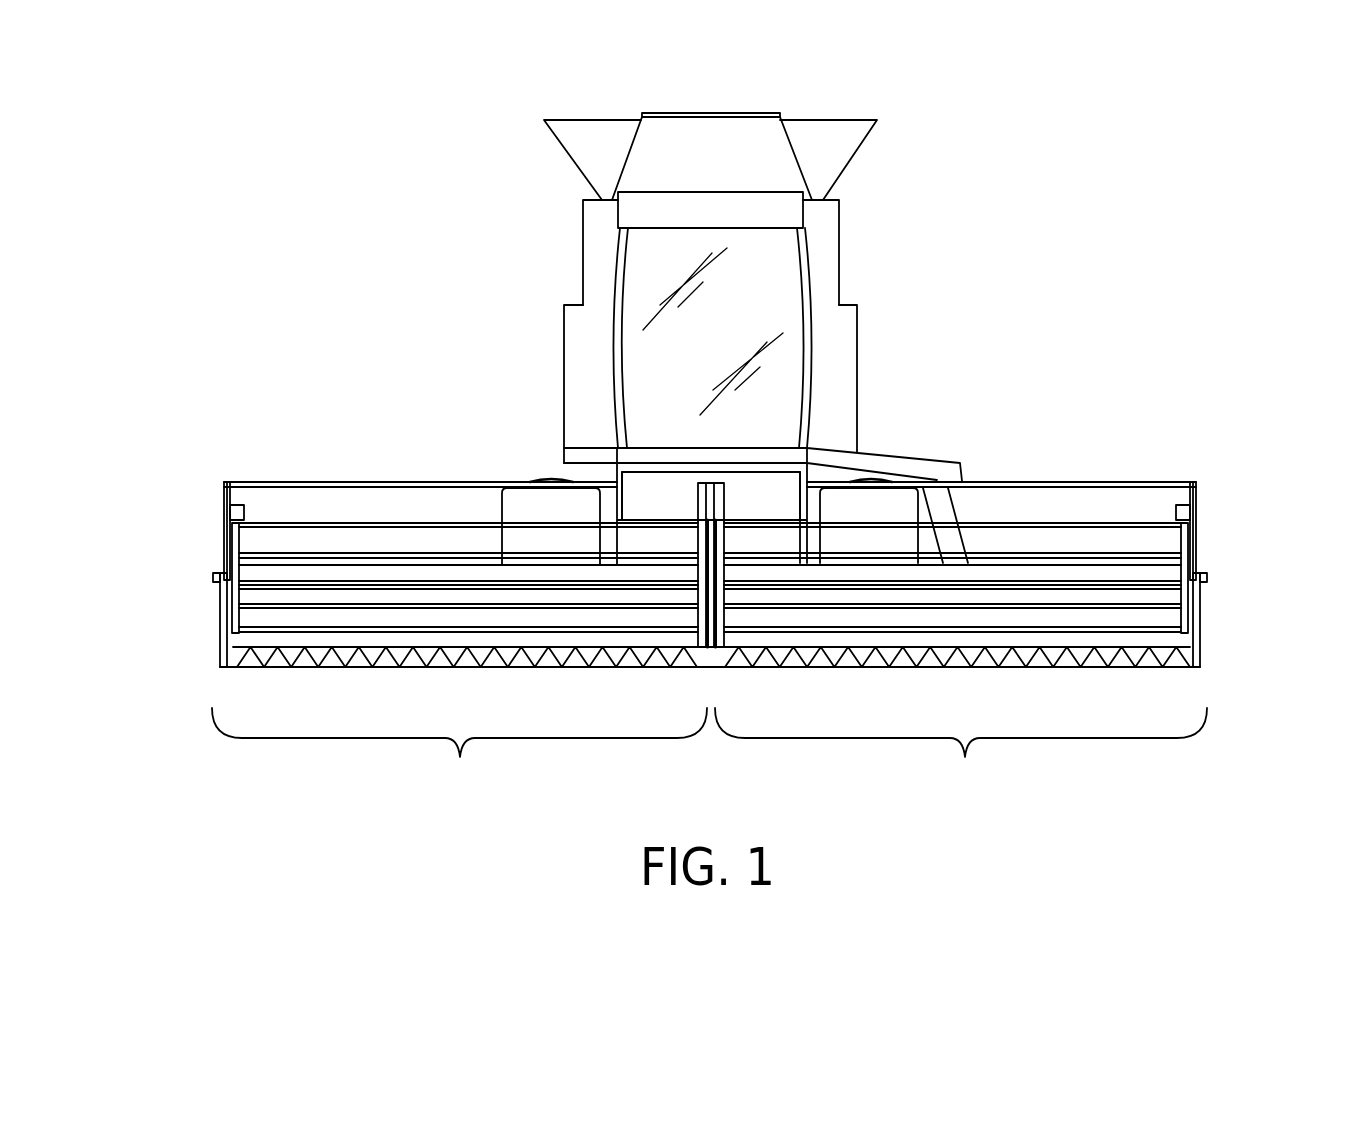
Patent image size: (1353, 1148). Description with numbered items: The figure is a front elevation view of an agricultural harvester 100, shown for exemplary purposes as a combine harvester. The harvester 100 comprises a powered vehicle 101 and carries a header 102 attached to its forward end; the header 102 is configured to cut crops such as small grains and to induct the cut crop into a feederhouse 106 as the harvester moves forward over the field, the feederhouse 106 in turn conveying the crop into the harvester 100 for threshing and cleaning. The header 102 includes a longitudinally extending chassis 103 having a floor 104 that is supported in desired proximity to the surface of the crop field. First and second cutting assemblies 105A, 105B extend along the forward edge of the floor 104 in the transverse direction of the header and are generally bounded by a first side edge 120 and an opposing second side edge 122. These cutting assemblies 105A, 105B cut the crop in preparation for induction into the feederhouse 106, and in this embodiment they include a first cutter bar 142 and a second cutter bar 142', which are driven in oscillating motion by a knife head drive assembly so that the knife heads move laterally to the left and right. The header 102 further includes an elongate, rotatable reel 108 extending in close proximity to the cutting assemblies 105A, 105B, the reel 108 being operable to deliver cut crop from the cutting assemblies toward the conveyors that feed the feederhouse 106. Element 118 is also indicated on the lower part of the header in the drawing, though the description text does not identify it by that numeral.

The agricultural harvester 100 is at (700, 453).
The powered vehicle 101 is at (840, 275).
The header 102 is at (700, 586).
The chassis 103 is at (1148, 481).
The floor 104 is at (415, 647).
The first cutting assembly 105A is at (459, 750).
The second cutting assembly 105B is at (961, 750).
The feederhouse 106 is at (759, 489).
The reel 108 is at (1019, 596).
The cutter bar 118 is at (713, 687).
The first side edge 120 is at (220, 640).
The second side edge 122 is at (1202, 640).
The first cutter bar 142 is at (467, 678).
The second cutter bar 142' is at (957, 678).